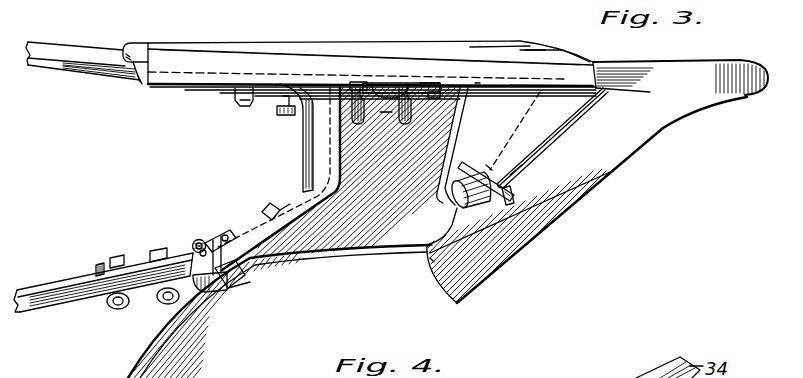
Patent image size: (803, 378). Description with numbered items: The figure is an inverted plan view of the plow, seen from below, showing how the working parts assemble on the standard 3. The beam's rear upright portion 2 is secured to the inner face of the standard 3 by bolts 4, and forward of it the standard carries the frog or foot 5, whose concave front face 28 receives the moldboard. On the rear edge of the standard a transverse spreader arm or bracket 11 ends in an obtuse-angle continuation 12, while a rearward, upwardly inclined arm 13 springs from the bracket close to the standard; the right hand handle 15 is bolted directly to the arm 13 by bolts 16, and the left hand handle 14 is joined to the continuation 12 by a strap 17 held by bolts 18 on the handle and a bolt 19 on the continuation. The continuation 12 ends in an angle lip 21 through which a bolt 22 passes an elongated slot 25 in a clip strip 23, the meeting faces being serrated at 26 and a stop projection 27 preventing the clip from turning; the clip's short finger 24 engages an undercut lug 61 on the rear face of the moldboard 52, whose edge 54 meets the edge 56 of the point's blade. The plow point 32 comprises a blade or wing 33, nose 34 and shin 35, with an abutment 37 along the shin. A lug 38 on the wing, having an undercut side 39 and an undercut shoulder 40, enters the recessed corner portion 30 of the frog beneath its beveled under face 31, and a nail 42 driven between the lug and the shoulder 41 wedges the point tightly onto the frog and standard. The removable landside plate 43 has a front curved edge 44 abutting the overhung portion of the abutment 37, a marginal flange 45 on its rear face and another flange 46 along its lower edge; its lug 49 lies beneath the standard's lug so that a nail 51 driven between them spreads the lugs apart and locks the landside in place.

The rear upright portion 2 is at (388, 118).
The standard 3 is at (477, 83).
The bolts 4 is at (367, 117).
The frog or foot 5 is at (490, 120).
The spreader arm or bracket 11 is at (313, 147).
The obtuse-angle continuation 12 is at (300, 250).
The arm or continuation 13 is at (300, 82).
The left hand plow handle 14 is at (37, 290).
The right hand plow handle 15 is at (65, 63).
The bolts 16 is at (290, 110).
The strap 17 is at (98, 268).
The bolts 18 is at (163, 250).
The bolt 19 is at (273, 207).
The angle lip 21 is at (217, 247).
The bolt 22 is at (165, 305).
The clip strip 23 is at (196, 240).
The short finger 24 is at (222, 288).
The elongated slot 25 is at (201, 243).
The serrations 26 is at (222, 232).
The stop projection 27 is at (207, 306).
The concave front face 28 is at (560, 135).
The recessed corner portion 30 is at (490, 170).
The beveled under face 31 is at (447, 207).
The plow point 32 is at (662, 128).
The blade or wing 33 is at (478, 277).
The nose 34 is at (750, 95).
The shin 35 is at (570, 52).
The abutment 37 is at (533, 50).
The lug 38 is at (450, 183).
The beveled or undercut side 39 is at (488, 205).
The beveled or undercut shoulder 40 is at (457, 208).
The shoulder 41 is at (520, 168).
The nail 42 is at (565, 214).
The landside plate 43 is at (375, 50).
The front curved edge 44 is at (535, 55).
The marginal rib or flange 45 is at (145, 84).
The flange 46 is at (165, 53).
The lug 49 is at (387, 85).
The nail 51 is at (417, 80).
The moldboard 52 is at (367, 244).
The edge 54 is at (427, 243).
The meeting edge 56 is at (430, 260).
The undercut lug 61 is at (247, 288).